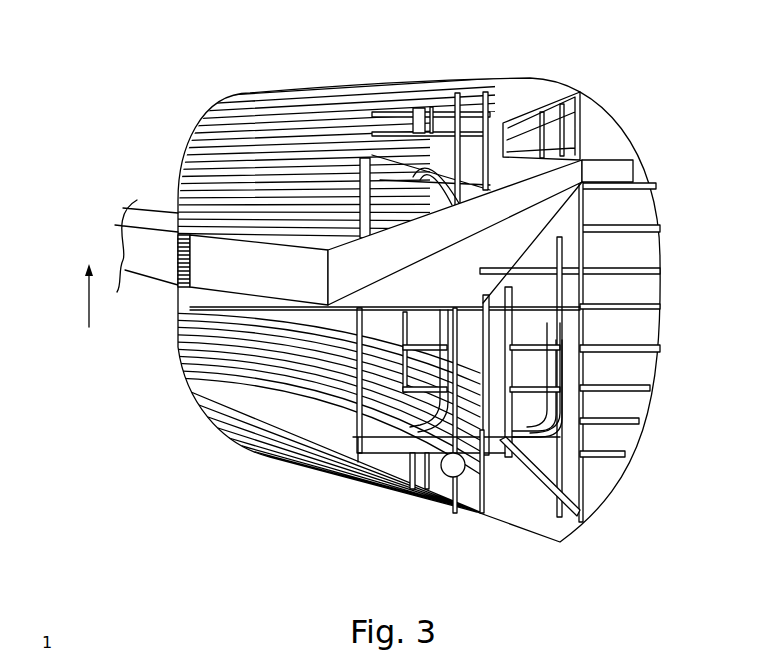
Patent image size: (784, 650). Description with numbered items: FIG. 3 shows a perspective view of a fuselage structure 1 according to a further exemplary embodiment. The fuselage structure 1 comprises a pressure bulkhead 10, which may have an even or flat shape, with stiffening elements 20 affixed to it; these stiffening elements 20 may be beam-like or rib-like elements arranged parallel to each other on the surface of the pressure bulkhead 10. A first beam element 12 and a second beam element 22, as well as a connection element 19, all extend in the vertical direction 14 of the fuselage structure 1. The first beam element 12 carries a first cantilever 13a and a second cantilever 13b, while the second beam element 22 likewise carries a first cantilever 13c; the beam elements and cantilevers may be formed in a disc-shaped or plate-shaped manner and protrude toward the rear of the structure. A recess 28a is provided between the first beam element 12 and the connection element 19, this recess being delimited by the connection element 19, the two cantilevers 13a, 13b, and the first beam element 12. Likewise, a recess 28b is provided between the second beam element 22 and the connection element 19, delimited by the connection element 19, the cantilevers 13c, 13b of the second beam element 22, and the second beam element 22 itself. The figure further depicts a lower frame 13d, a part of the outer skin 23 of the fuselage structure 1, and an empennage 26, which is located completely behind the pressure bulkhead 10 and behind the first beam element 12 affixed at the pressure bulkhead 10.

The fuselage structure 1 is at (148, 93).
The pressure bulkhead 10 is at (607, 147).
The first beam element 12 is at (590, 380).
The first cantilever 13a is at (580, 120).
The second cantilever 13b is at (540, 455).
The first cantilever 13c is at (410, 145).
The lower frame 13d is at (390, 445).
The vertical direction 14 is at (88, 302).
The connection element 19 is at (510, 327).
The stiffening elements 20 is at (637, 220).
The second beam element 22 is at (482, 443).
The outer skin 23 is at (213, 363).
The empennage 26 is at (233, 253).
The recess 28a is at (573, 463).
The recess 28b is at (357, 377).